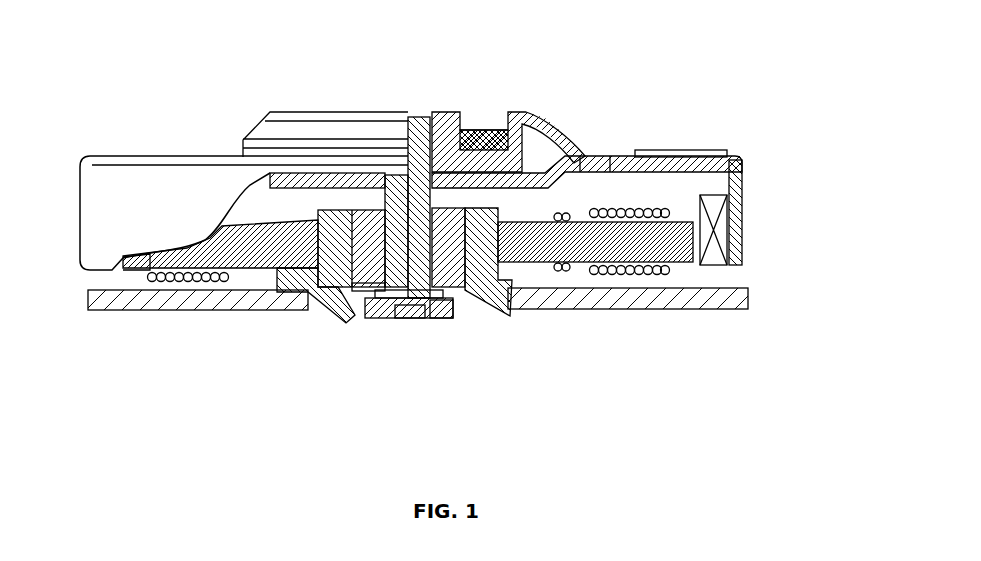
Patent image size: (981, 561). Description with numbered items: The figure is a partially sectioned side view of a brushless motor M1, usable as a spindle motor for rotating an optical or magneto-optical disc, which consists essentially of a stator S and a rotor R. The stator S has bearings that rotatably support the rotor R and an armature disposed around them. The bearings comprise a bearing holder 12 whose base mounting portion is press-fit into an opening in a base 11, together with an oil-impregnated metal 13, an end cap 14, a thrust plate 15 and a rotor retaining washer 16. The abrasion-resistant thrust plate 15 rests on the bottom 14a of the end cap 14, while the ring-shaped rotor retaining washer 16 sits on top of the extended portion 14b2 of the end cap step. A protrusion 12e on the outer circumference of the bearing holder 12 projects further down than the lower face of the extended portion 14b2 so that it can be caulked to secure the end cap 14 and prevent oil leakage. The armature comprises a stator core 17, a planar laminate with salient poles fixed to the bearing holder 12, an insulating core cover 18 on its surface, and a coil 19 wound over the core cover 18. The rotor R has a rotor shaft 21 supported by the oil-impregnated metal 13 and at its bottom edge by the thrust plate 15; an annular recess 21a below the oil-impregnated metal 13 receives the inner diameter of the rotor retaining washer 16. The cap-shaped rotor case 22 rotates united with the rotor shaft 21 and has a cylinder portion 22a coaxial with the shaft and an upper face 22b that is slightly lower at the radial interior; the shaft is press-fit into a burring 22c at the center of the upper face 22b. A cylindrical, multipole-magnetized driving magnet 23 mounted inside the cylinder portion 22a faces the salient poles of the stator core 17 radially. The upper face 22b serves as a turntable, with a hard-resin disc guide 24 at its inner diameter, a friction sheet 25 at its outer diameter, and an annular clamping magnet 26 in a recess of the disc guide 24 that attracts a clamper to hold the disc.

The brushless motor M1 is at (190, 129).
The rotor R is at (755, 157).
The stator S is at (760, 298).
The base 11 is at (697, 300).
The bearing holder 12 is at (283, 310).
The protrusion 12e is at (503, 312).
The oil-impregnated metal 13 is at (363, 207).
The end cap 14 is at (383, 303).
The bottom 14a is at (407, 318).
The extended portion 14b2 is at (455, 320).
The thrust plate 15 is at (437, 320).
The rotor retaining washer 16 is at (337, 290).
The stator core 17 is at (233, 310).
The core cover 18 is at (563, 278).
The coil 19 is at (613, 308).
The rotor shaft 21 is at (407, 115).
The annular recess 21a is at (363, 290).
The rotor case 22 is at (743, 180).
The cylinder portion 22a is at (743, 213).
The upper face 22b is at (595, 153).
The burring 22c is at (460, 130).
The driving magnet 23 is at (743, 243).
The disc guide 24 is at (300, 113).
The friction sheet 25 is at (678, 150).
The clamping magnet 26 is at (492, 127).